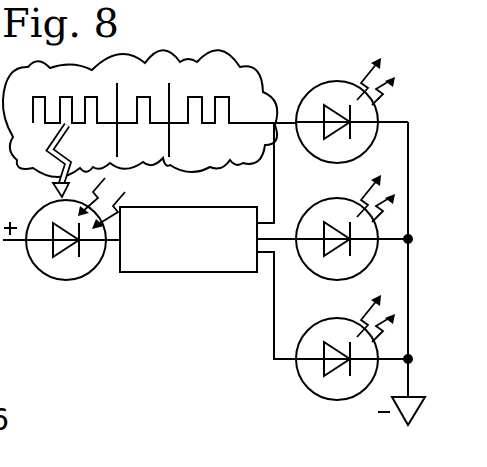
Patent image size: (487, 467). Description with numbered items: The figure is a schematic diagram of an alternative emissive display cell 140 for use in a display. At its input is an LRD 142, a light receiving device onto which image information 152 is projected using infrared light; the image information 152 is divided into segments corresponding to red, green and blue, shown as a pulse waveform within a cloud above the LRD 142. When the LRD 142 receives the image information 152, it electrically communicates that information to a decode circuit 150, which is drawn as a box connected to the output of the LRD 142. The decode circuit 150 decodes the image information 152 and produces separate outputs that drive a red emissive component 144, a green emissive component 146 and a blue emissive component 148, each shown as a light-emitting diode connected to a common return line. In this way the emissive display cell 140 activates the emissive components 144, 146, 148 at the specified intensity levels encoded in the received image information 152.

The emissive display cell 140 is at (172, 357).
The LRD 142 is at (64, 280).
The red emissive component 144 is at (310, 94).
The green emissive component 146 is at (310, 211).
The blue emissive component 148 is at (310, 331).
The decode circuit 150 is at (193, 272).
The image information 152 is at (165, 51).